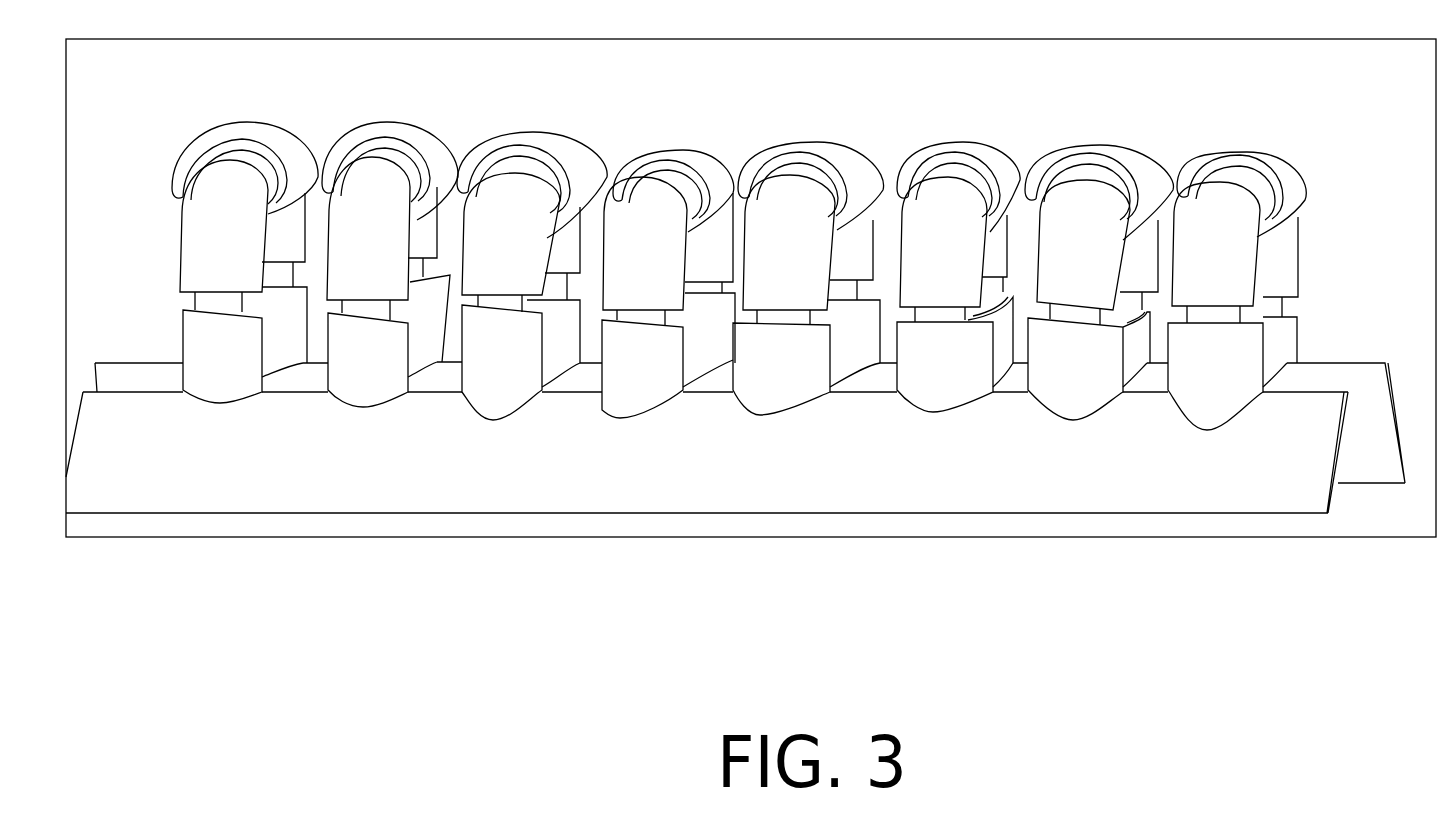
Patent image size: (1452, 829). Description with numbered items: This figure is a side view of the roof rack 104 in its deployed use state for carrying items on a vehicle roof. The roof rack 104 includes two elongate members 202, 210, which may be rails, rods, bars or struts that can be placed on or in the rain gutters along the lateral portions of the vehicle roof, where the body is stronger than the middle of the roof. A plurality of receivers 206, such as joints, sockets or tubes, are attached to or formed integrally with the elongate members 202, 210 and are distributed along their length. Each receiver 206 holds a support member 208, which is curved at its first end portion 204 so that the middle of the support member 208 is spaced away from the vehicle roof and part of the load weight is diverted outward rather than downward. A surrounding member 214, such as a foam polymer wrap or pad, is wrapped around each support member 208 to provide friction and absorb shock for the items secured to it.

The roof rack 104 is at (764, 252).
The elongate member 202 is at (1322, 484).
The first end portion 204 is at (1277, 291).
The receiver 206 is at (1248, 358).
The support member 208 is at (1288, 250).
The elongate member 210 is at (1355, 373).
The surrounding member 214 is at (1285, 175).